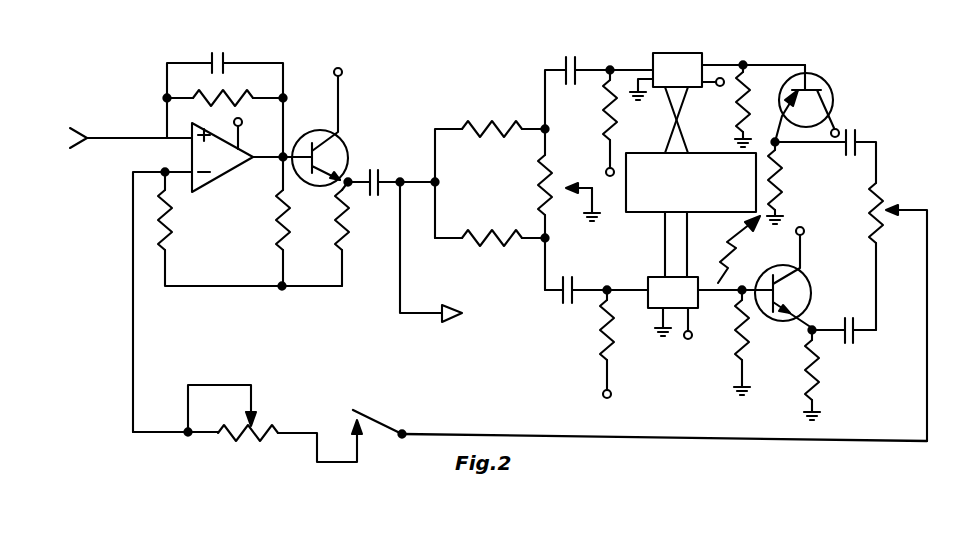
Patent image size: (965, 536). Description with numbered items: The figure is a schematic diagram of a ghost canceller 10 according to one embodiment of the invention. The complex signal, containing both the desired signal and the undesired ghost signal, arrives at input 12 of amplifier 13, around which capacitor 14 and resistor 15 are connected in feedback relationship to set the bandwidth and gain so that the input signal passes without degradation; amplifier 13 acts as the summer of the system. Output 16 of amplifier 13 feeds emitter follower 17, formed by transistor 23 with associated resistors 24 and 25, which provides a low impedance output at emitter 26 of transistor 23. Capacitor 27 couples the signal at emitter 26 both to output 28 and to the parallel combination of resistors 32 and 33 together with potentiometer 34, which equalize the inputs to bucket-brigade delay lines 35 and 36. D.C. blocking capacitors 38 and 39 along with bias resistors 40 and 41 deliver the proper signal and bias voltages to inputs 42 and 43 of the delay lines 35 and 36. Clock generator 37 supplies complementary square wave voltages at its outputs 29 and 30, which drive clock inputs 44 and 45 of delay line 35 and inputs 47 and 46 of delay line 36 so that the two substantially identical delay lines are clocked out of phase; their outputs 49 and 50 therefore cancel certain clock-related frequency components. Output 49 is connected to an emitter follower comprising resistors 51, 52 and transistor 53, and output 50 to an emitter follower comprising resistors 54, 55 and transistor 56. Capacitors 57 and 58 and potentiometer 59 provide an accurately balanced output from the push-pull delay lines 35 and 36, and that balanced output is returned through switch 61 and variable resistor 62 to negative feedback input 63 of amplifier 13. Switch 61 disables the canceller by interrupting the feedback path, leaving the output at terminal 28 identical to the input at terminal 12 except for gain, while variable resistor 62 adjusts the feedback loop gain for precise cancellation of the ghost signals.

The circuit 10 is at (953, 59).
The input 12 is at (150, 138).
The amplifier 13 is at (224, 167).
The capacitor 14 is at (235, 62).
The resistor 15 is at (238, 96).
The output 16 is at (253, 162).
The emitter follower 17 is at (394, 115).
The transistor 23 is at (318, 130).
The resistor 24 is at (290, 225).
The resistor 25 is at (352, 226).
The emitter 26 is at (372, 178).
The capacitor 27 is at (380, 192).
The output 28 is at (455, 318).
The output 29 is at (670, 150).
The output 30 is at (683, 150).
The resistor 32 is at (503, 137).
The resistor 33 is at (478, 232).
The potentiometer 34 is at (540, 206).
The bucket-brigade delay line 35 is at (677, 76).
The bucket-brigade delay line 36 is at (691, 246).
The clock generator 37 is at (627, 212).
The D.C. blocking capacitor 38 is at (560, 66).
The D.C. blocking capacitor 39 is at (558, 292).
The resistor 40 is at (603, 108).
The resistor 41 is at (600, 340).
The input 42 is at (648, 66).
The input 43 is at (612, 318).
The input 44 is at (660, 92).
The input 45 is at (692, 92).
The input 46 is at (660, 282).
The input 47 is at (710, 246).
The output 49 is at (730, 60).
The output 50 is at (732, 310).
The resistor 51 is at (753, 112).
The resistor 52 is at (790, 178).
The transistor 53 is at (833, 95).
The resistor 54 is at (735, 348).
The resistor 55 is at (808, 352).
The transistor 56 is at (812, 298).
The capacitor 57 is at (860, 138).
The capacitor 58 is at (857, 334).
The potentiometer 59 is at (888, 205).
The switch 61 is at (378, 410).
The variable resistor 62 is at (262, 426).
The input 63 is at (165, 172).